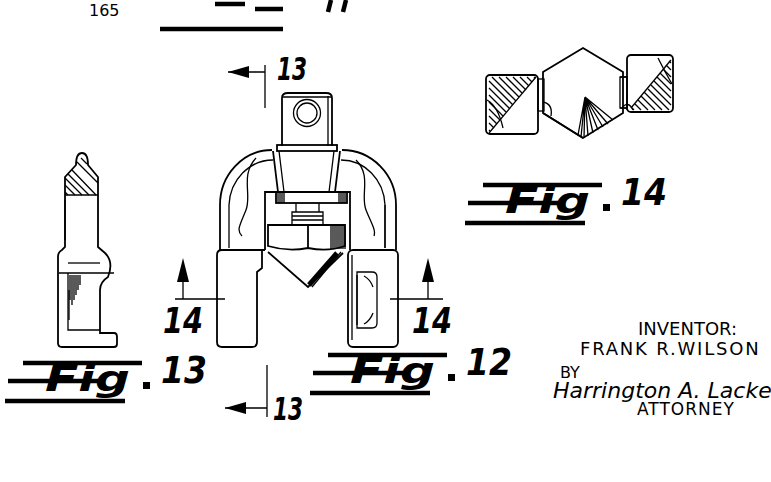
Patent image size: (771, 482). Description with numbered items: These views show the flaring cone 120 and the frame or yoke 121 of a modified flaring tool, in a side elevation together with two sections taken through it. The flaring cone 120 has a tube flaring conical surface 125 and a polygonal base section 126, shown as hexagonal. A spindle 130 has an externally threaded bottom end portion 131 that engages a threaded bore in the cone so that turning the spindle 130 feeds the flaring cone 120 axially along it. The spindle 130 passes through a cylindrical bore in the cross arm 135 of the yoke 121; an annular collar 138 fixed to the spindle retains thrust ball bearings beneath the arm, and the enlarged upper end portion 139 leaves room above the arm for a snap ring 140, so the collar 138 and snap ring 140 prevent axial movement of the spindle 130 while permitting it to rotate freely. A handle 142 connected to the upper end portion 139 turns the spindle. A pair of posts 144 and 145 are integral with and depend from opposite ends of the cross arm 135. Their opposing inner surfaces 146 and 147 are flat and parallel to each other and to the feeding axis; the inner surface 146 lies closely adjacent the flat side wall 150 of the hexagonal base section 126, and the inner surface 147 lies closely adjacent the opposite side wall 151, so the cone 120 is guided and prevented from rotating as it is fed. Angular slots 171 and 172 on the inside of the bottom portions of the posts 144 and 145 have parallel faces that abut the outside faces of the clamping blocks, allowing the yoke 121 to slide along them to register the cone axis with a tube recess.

In FIG. 12, the flaring cone 120 is at (335, 262).
In FIG. 14, the flaring cone 120 is at (620, 46).
In FIG. 13, the yoke 121 is at (58, 156).
In FIG. 12, the yoke 121 is at (377, 178).
In FIG. 14, the yoke 121 is at (686, 79).
In FIG. 12, the tube flaring conical surface 125 is at (317, 274).
In FIG. 14, the tube flaring conical surface 125 is at (568, 64).
In FIG. 12, the polygonal base section 126 is at (291, 247).
In FIG. 14, the polygonal base section 126 is at (592, 50).
In FIG. 12, the spindle 130 is at (332, 200).
In FIG. 12, the externally threaded bottom end portion 131 is at (294, 214).
In FIG. 13, the cross arm 135 is at (92, 183).
In FIG. 12, the cross arm 135 is at (330, 165).
In FIG. 12, the annular collar 138 is at (274, 192).
In FIG. 12, the upper end portion 139 is at (320, 94).
In FIG. 12, the snap ring 140 is at (282, 147).
In FIG. 12, the handle 142 is at (321, 114).
In FIG. 13, the post 144 is at (71, 236).
In FIG. 12, the post 144 is at (228, 240).
In FIG. 14, the post 144 is at (497, 75).
In FIG. 12, the post 145 is at (385, 219).
In FIG. 14, the post 145 is at (672, 100).
In FIG. 13, the inner surface 146 is at (85, 253).
In FIG. 12, the inner surface 146 is at (262, 206).
In FIG. 14, the inner surface 146 is at (536, 77).
In FIG. 12, the inner surface 147 is at (348, 207).
In FIG. 14, the inner surface 147 is at (630, 63).
In FIG. 12, the side wall 150 is at (268, 248).
In FIG. 14, the side wall 150 is at (545, 116).
In FIG. 12, the side wall 151 is at (348, 243).
In FIG. 14, the side wall 151 is at (635, 108).
In FIG. 13, the angular slot 171 is at (90, 309).
In FIG. 14, the angular slot 171 is at (497, 114).
In FIG. 12, the angular slot 172 is at (368, 307).
In FIG. 14, the angular slot 172 is at (663, 80).